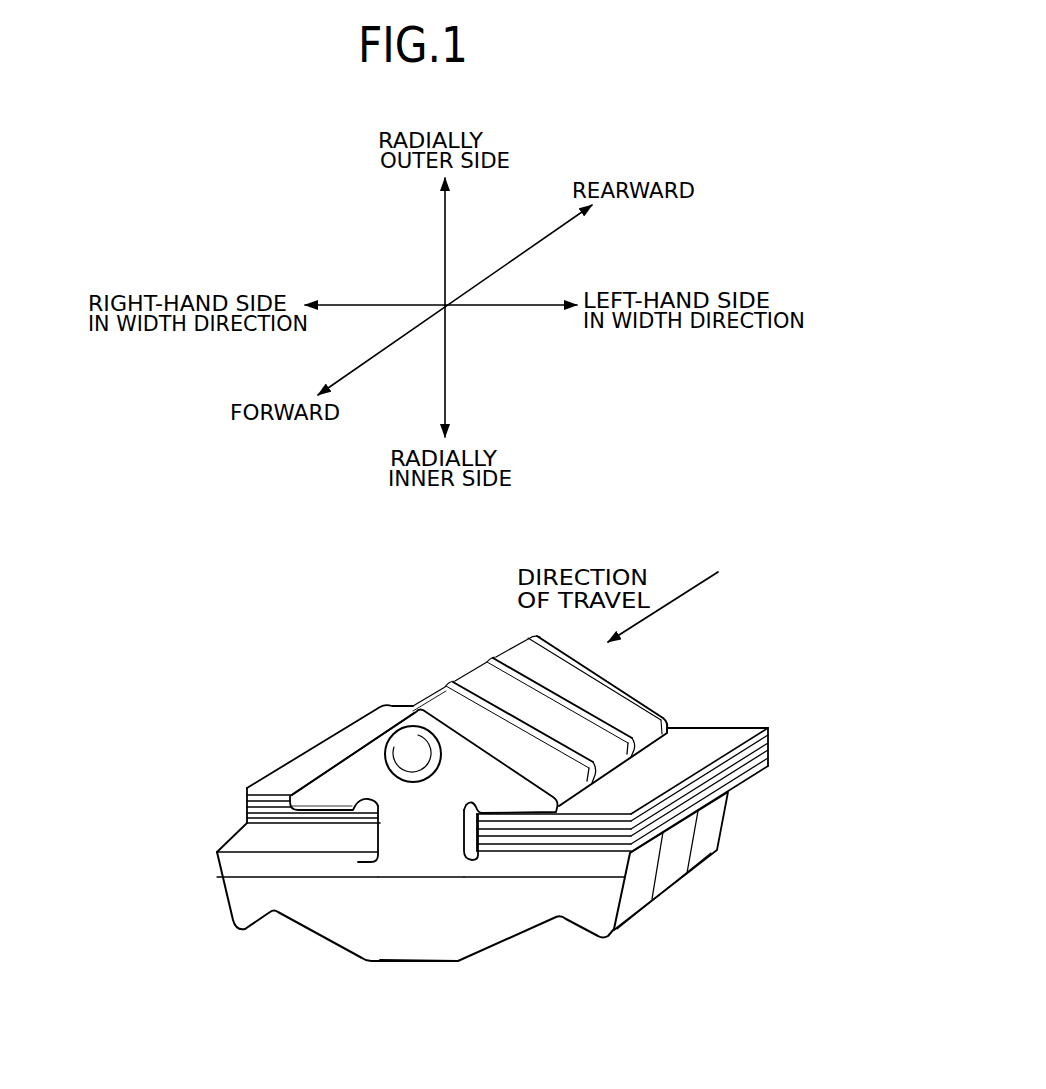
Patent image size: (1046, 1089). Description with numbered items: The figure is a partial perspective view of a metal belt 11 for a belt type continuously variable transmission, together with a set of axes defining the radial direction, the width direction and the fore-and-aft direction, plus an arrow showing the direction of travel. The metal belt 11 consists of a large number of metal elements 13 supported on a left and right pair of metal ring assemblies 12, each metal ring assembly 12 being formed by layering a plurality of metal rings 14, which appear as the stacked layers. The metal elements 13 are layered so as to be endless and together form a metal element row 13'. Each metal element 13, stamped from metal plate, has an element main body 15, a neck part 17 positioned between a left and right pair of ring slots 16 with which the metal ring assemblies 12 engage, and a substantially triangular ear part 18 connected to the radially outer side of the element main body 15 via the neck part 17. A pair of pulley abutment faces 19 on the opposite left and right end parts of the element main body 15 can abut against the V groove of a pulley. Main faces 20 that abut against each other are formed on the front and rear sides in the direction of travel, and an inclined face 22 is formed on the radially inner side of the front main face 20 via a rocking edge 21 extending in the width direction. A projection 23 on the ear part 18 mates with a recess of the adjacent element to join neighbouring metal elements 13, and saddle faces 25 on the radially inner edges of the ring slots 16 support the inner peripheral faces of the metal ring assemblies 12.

The metal belt 11 is at (455, 630).
The metal ring assembly 12 is at (266, 767).
The metal element 13 is at (505, 951).
The metal element row 13' is at (322, 701).
The metal ring 14 is at (247, 822).
The element main body 15 is at (265, 866).
The ring slot 16 is at (367, 842).
The neck part 17 is at (420, 850).
The ear part 18 is at (352, 762).
The pulley abutment face 19 is at (648, 884).
The main face 20 is at (430, 834).
The rocking edge 21 is at (367, 879).
The inclined face 22 is at (428, 929).
The projection 23 is at (402, 748).
The saddle face 25 is at (283, 836).